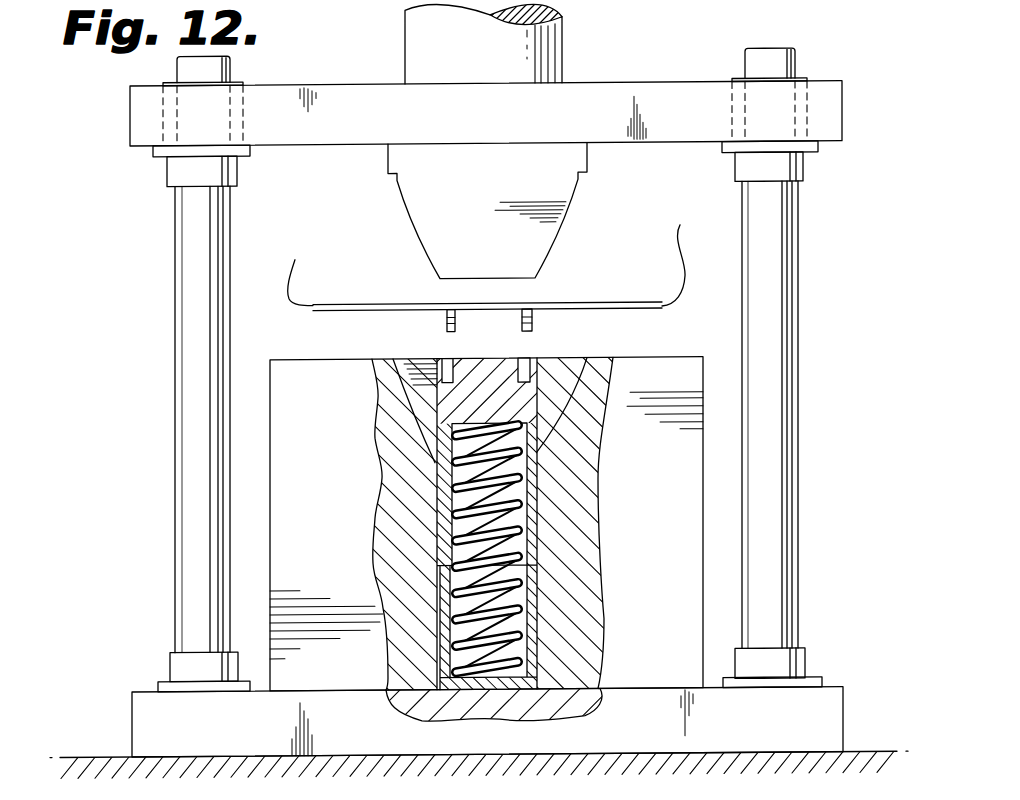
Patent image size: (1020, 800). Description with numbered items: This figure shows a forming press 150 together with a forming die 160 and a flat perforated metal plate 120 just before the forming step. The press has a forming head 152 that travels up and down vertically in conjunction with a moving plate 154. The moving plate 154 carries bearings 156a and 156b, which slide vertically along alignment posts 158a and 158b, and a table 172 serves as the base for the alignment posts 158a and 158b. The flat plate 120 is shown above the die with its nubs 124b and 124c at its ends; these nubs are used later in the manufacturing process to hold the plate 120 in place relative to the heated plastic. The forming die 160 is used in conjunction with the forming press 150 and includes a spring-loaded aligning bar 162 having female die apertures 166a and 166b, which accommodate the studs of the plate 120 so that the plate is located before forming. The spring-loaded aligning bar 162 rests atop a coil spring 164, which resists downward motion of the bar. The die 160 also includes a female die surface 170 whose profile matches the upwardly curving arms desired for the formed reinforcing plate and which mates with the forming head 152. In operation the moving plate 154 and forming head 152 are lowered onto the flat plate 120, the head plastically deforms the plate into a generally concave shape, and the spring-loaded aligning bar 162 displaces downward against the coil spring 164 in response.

The forming press 150 is at (385, 74).
The moving plate 154 is at (653, 98).
The forming head 152 is at (449, 193).
The plate 120 is at (606, 268).
The nub 124b is at (289, 268).
The nub 124c is at (681, 251).
The bearing 156a is at (207, 180).
The bearing 156b is at (787, 172).
The alignment post 158a is at (198, 393).
The alignment post 158b is at (768, 462).
The forming die 160 is at (260, 541).
The spring-loaded aligning bar 162 is at (500, 408).
The coil spring 164 is at (513, 611).
The female die aperture 166a is at (447, 360).
The female die aperture 166b is at (532, 360).
The female die surface 170 is at (411, 401).
The table 172 is at (147, 718).